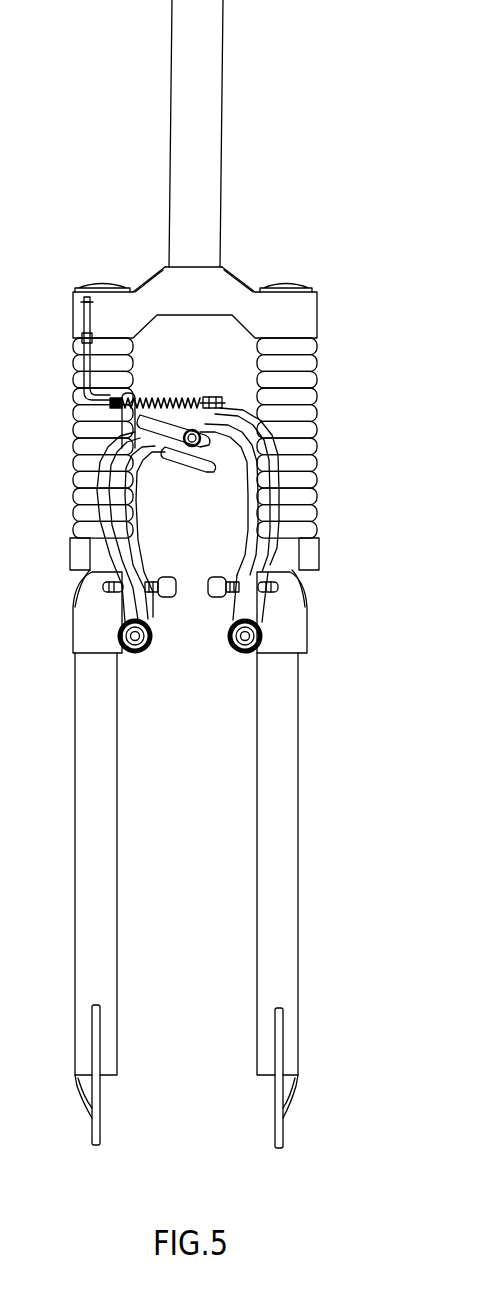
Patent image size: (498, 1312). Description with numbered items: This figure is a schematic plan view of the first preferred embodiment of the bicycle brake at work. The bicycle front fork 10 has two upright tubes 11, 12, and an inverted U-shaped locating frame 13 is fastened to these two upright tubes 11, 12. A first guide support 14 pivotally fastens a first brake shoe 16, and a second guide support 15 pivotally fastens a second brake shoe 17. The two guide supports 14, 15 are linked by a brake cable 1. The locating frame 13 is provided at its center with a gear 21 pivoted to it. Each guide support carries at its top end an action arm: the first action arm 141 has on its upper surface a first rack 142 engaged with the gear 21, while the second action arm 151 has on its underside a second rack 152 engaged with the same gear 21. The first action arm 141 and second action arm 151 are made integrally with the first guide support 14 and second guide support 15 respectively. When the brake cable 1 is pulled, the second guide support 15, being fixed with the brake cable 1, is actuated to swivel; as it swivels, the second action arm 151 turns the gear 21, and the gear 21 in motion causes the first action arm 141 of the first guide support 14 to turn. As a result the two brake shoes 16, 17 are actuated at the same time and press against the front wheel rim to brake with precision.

The brake cable 1 is at (84, 313).
The bicycle front fork 10 is at (325, 195).
The upright tube 11 is at (75, 985).
The upright tube 12 is at (257, 995).
The locating frame 13 is at (83, 627).
The first guide support 14 is at (117, 490).
The second guide support 15 is at (275, 505).
The first brake shoe 16 is at (167, 598).
The second brake shoe 17 is at (216, 600).
The gear 21 is at (205, 452).
The first action arm 141 is at (170, 451).
The first rack 142 is at (233, 467).
The second action arm 151 is at (217, 397).
The second rack 152 is at (205, 441).